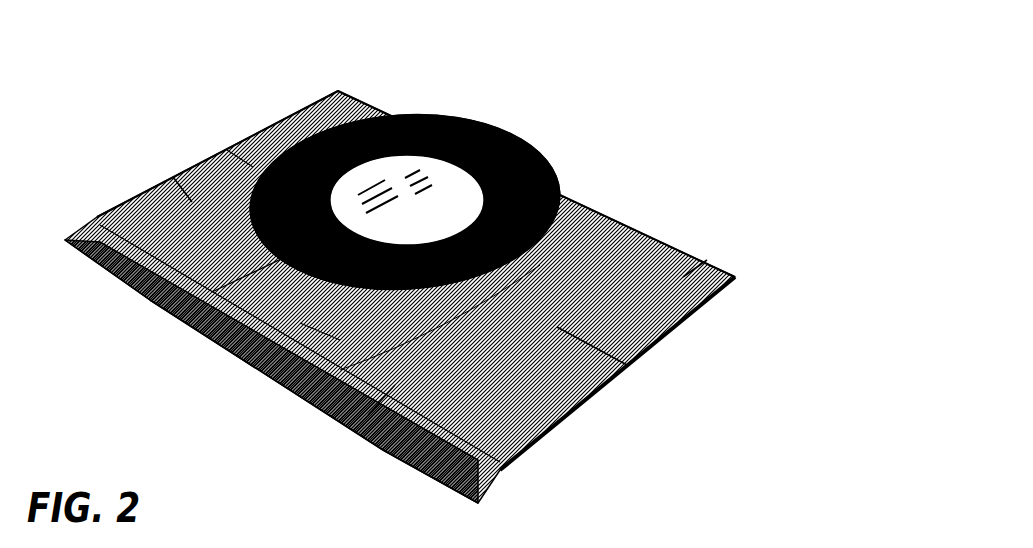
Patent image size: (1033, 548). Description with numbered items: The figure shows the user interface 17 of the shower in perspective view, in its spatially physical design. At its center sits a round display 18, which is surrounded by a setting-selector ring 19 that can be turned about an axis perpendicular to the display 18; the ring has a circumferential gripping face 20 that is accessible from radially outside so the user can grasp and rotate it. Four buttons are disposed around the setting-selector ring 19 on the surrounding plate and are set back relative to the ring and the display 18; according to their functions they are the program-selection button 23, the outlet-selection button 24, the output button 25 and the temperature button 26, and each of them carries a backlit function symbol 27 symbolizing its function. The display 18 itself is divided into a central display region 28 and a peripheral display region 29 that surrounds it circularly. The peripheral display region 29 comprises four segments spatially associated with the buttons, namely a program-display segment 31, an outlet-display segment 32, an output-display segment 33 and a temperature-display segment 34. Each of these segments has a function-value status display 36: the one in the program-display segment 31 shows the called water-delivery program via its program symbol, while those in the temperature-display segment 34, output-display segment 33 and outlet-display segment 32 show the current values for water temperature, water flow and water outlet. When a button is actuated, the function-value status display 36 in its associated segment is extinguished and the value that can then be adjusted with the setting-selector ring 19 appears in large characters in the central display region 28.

The user interface 17 is at (685, 437).
The round display 18 is at (467, 117).
The setting-selector ring 19 is at (560, 190).
The circumferential gripping face 20 is at (541, 254).
The program-selection button 23 is at (278, 125).
The outlet-selection button 24 is at (680, 336).
The output button 25 is at (548, 408).
The temperature button 26 is at (190, 200).
The backlit function symbol 27 is at (697, 257).
The central display region 28 is at (420, 170).
The peripheral display region 29 is at (393, 110).
The program-display segment 31 is at (347, 93).
The outlet-display segment 32 is at (541, 148).
The output-display segment 33 is at (368, 415).
The temperature-display segment 34 is at (212, 292).
The function-value status display 36 is at (393, 287).